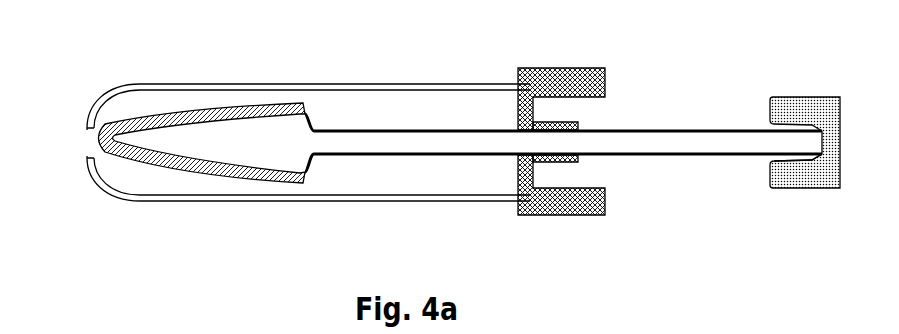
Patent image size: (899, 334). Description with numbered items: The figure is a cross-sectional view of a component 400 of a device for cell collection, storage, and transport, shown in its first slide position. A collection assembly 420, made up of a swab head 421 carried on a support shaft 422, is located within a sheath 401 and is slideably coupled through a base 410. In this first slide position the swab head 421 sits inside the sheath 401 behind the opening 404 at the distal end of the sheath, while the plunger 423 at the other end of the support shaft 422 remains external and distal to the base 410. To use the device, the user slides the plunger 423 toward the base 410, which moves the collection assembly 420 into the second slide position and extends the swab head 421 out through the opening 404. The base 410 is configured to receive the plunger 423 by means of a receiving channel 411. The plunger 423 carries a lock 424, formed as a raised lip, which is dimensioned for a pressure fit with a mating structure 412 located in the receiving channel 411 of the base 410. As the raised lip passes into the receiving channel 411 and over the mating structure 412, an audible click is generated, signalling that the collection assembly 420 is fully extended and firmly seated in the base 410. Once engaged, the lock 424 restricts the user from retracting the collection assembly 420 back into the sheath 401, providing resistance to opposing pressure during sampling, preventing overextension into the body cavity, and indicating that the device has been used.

The component 400 is at (432, 144).
The sheath 401 is at (137, 201).
The opening 404 is at (75, 142).
The base 410 is at (572, 68).
The receiving channel 411 is at (587, 168).
The mating structure 412 is at (578, 123).
The collection assembly 420 is at (457, 155).
The swab head 421 is at (213, 160).
The support shaft 422 is at (683, 140).
The plunger 423 is at (787, 190).
The lock 424 is at (810, 159).